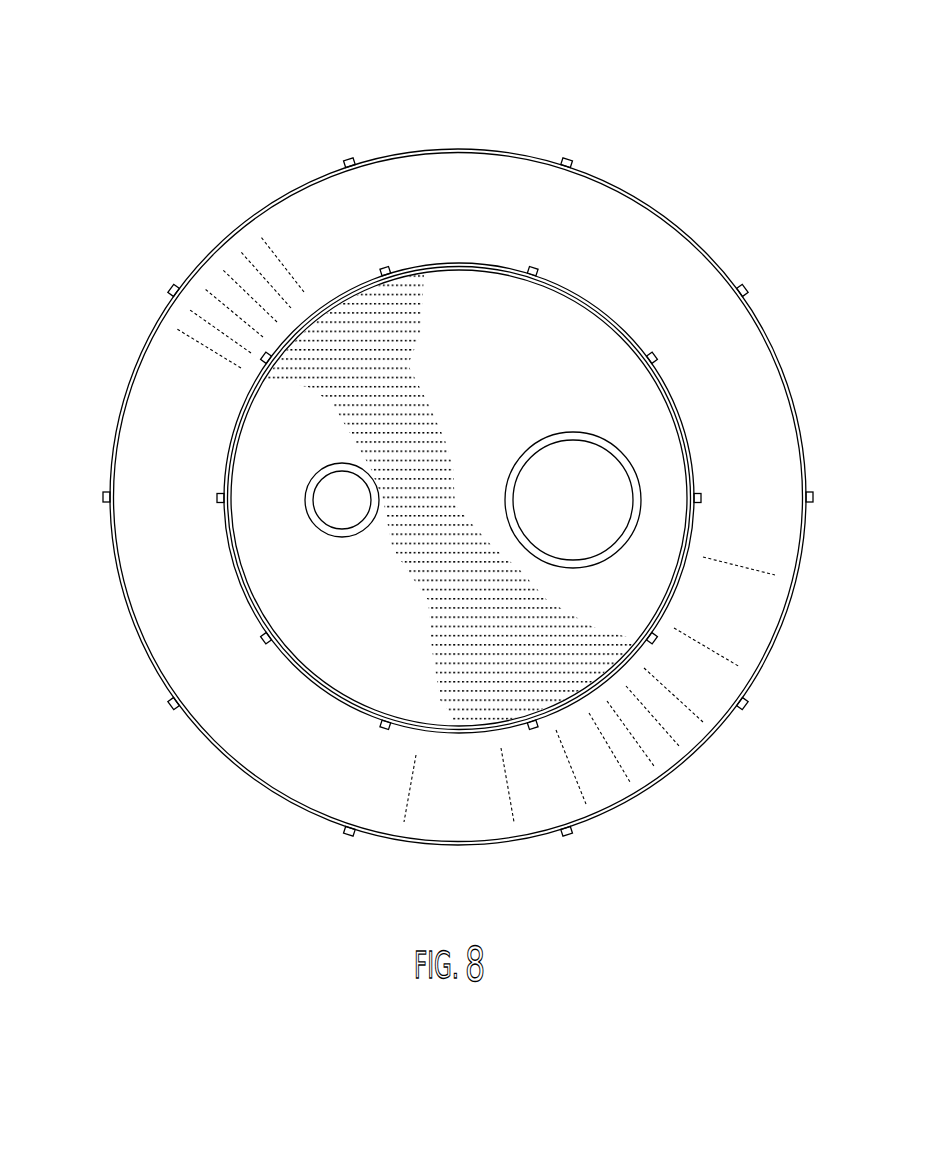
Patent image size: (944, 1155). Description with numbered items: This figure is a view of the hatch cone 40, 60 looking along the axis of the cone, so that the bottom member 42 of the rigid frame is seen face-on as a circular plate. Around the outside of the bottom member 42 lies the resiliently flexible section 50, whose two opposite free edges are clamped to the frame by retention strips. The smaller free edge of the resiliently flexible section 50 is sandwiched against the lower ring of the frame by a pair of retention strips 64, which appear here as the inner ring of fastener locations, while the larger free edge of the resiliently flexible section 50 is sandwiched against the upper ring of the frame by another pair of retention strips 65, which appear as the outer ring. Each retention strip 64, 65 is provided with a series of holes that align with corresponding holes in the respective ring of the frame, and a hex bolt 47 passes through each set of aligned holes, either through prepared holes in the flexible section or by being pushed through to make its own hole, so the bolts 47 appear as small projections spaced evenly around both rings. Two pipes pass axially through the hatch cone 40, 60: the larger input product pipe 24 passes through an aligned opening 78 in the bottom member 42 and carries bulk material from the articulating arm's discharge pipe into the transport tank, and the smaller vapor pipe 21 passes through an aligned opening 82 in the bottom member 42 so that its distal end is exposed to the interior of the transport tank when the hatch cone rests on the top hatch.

The hatch cone 40 is at (183, 125).
The hatch cone 60 is at (446, 428).
The hex bolt 47 is at (381, 265).
The retention strip 65 is at (487, 152).
The resiliently flexible section 50 is at (614, 218).
The retention strip 64 is at (461, 264).
The bottom member 42 is at (587, 352).
The aligned opening 78 is at (552, 438).
The aligned opening 82 is at (332, 467).
The vapor pipe 21 is at (368, 480).
The input product pipe 24 is at (617, 460).